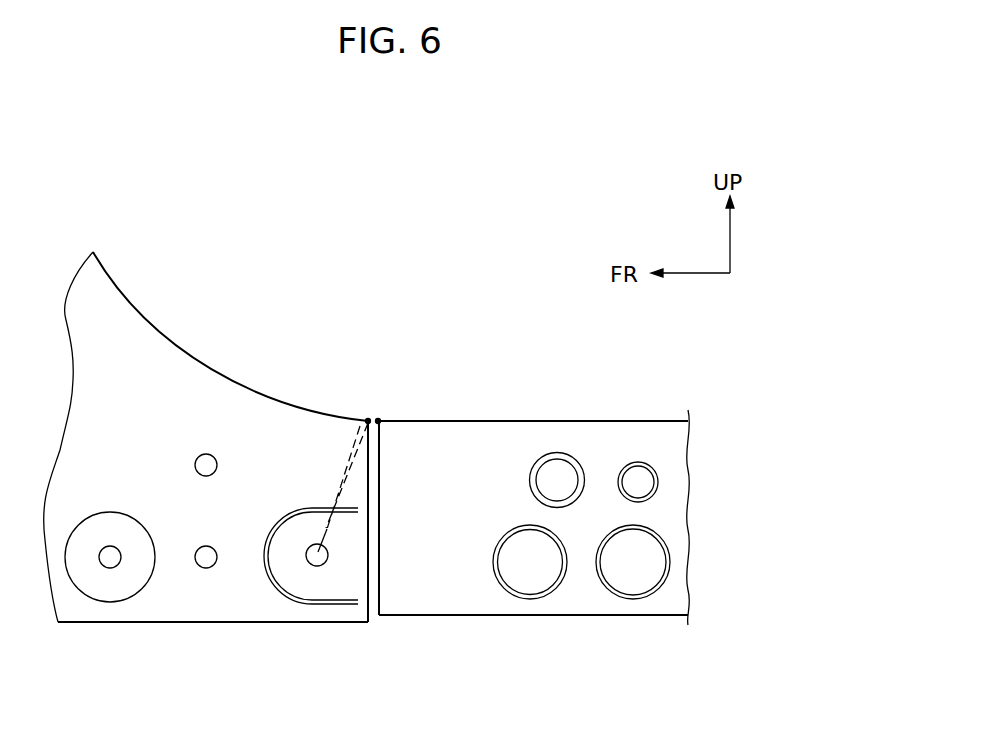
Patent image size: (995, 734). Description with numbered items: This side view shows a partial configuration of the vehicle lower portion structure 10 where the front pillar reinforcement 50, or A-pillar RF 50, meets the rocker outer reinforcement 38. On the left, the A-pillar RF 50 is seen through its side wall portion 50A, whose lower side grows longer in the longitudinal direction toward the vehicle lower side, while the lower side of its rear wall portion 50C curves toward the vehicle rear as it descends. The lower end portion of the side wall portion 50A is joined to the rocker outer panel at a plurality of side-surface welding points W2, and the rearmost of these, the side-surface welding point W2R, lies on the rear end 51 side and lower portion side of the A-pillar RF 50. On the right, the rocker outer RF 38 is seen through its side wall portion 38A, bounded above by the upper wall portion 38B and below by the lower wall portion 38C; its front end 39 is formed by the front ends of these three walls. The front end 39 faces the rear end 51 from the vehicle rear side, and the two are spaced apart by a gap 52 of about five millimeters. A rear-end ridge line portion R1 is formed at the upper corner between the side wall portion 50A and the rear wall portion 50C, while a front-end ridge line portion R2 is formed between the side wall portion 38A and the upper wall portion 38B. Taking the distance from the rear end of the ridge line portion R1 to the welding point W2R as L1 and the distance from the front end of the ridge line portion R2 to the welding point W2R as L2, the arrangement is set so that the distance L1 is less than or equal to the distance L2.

The vehicle body structure 10 is at (389, 329).
The rocker outer reinforcement 38 is at (548, 421).
The side wall portion 38A is at (487, 443).
The upper wall portion 38B is at (594, 421).
The lower wall portion 38C is at (600, 616).
The front end 39 is at (378, 527).
The front pillar reinforcement 50 is at (158, 340).
The side wall portion 50A is at (170, 398).
The rear wall portion 50C is at (122, 300).
The rear end 51 is at (367, 572).
The gap 52 is at (373, 615).
The side-surface welding points W2 is at (203, 546).
The rearmost side-surface welding point W2R is at (307, 560).
The distance L1 is at (368, 480).
The distance L2 is at (379, 477).
The rear-end ridge line portion R1 is at (338, 417).
The front-end ridge line portion R2 is at (416, 421).